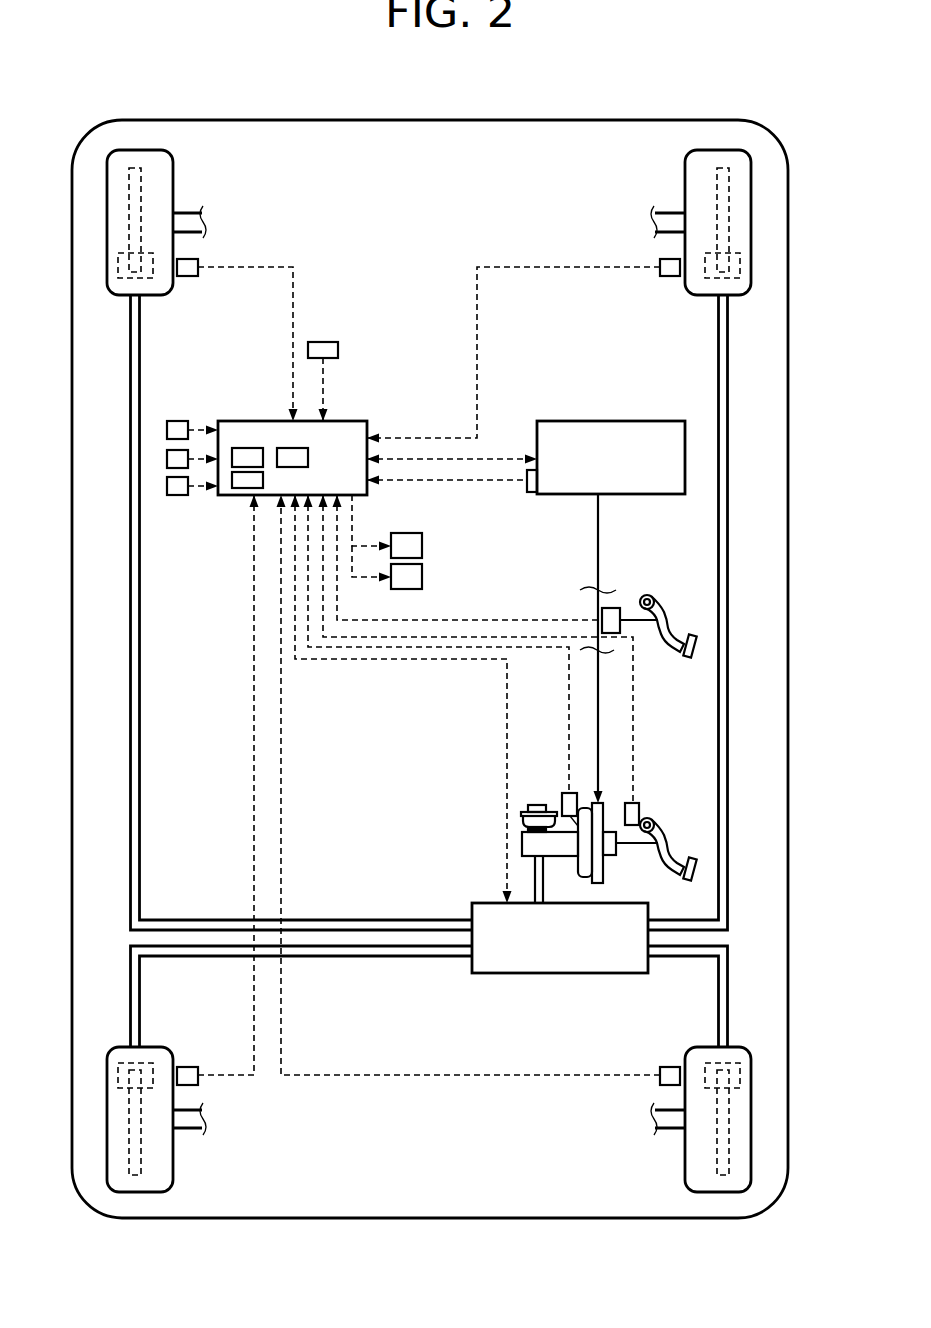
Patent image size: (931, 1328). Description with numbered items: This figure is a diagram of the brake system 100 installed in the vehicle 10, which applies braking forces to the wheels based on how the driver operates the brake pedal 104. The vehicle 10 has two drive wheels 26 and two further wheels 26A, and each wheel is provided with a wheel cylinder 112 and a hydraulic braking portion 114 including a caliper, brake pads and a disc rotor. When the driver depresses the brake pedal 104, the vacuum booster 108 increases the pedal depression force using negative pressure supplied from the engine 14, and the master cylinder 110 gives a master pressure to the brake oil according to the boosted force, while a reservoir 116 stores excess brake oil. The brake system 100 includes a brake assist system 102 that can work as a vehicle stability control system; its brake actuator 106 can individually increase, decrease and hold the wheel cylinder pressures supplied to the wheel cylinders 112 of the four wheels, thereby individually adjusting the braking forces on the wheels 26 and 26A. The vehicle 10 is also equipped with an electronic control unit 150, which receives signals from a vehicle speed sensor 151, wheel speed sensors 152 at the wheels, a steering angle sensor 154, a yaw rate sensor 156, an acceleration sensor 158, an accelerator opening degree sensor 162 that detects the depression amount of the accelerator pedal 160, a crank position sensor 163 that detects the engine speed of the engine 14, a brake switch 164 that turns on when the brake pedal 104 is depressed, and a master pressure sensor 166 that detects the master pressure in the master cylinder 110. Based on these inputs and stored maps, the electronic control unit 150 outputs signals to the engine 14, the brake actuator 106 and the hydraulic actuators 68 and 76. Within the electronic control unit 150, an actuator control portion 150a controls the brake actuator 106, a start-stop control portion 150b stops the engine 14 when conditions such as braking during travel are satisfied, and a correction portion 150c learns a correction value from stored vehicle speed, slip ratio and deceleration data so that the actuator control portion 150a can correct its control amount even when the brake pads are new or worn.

The vehicle 10 is at (793, 792).
The brake system 100 is at (745, 695).
The brake assist system 102 is at (743, 927).
The wheels 26A is at (137, 150).
The drive wheels 26 is at (140, 1192).
The wheel cylinders 112 is at (150, 280).
The hydraulic braking portions 114 is at (183, 185).
The wheel speed sensors 152 is at (187, 276).
The vehicle speed sensor 151 is at (323, 342).
The electronic control unit 150 is at (290, 456).
The actuator control portion 150a is at (250, 448).
The start-stop control portion 150b is at (325, 447).
The correction portion 150c is at (245, 488).
The steering angle sensor 154 is at (167, 430).
The yaw rate sensor 156 is at (167, 459).
The acceleration sensor 158 is at (167, 486).
The engine 14 is at (608, 421).
The crank position sensor 163 is at (533, 492).
The hydraulic actuator 68 is at (422, 546).
The hydraulic actuator 76 is at (422, 577).
The accelerator opening degree sensor 162 is at (615, 608).
The accelerator pedal 160 is at (667, 636).
The master pressure sensor 166 is at (568, 793).
The brake switch 164 is at (633, 803).
The brake pedal 104 is at (690, 865).
The vacuum booster 108 is at (592, 868).
The master cylinder 110 is at (562, 856).
The reservoir 116 is at (528, 805).
The brake actuator 106 is at (566, 973).